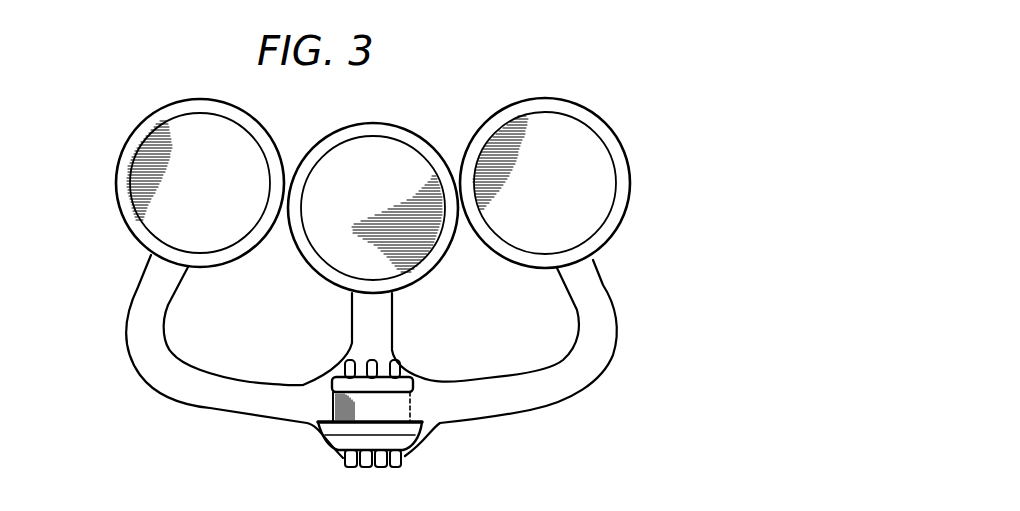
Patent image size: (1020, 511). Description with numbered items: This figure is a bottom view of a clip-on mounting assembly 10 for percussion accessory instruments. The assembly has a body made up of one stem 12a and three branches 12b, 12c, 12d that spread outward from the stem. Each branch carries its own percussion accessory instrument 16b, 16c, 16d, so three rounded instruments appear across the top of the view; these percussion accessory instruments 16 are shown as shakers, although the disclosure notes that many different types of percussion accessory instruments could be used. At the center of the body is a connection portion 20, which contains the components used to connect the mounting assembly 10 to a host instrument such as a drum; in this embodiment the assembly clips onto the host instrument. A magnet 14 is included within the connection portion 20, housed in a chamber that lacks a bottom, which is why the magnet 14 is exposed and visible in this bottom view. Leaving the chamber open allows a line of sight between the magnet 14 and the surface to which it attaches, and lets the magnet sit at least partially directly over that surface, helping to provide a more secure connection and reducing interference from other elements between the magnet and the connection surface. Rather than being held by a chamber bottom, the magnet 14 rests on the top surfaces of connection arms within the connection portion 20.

The mounting assembly 10 is at (612, 90).
The stem 12a is at (218, 401).
The branch 12b is at (145, 292).
The branch 12c is at (353, 312).
The branch 12d is at (597, 287).
The magnet 14 is at (402, 406).
The percussion accessory instrument 16 is at (630, 133).
The percussion accessory instrument 16b is at (150, 118).
The percussion accessory instrument 16c is at (397, 130).
The percussion accessory instrument 16d is at (622, 197).
The connection portion 20 is at (320, 465).